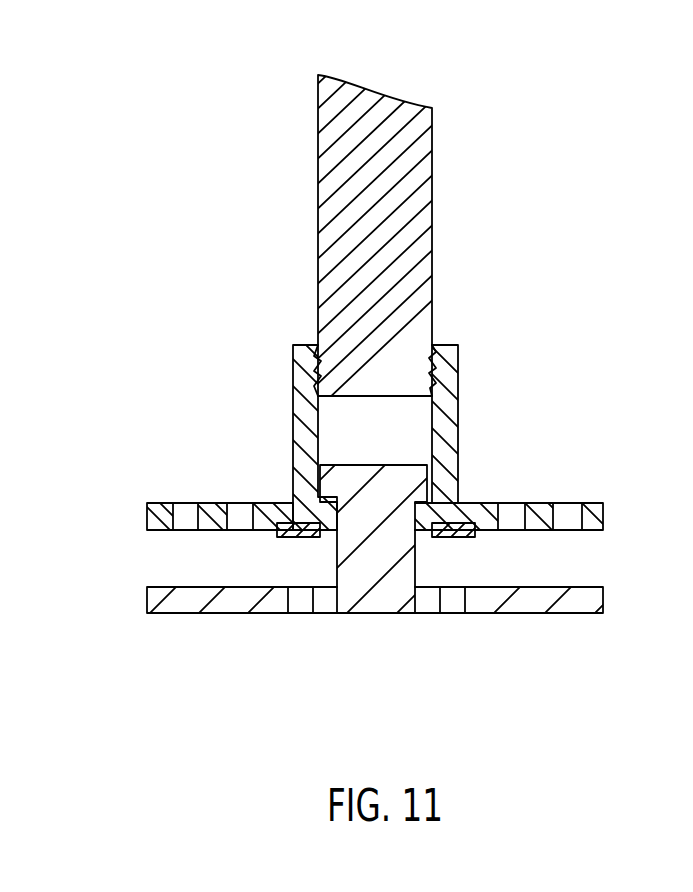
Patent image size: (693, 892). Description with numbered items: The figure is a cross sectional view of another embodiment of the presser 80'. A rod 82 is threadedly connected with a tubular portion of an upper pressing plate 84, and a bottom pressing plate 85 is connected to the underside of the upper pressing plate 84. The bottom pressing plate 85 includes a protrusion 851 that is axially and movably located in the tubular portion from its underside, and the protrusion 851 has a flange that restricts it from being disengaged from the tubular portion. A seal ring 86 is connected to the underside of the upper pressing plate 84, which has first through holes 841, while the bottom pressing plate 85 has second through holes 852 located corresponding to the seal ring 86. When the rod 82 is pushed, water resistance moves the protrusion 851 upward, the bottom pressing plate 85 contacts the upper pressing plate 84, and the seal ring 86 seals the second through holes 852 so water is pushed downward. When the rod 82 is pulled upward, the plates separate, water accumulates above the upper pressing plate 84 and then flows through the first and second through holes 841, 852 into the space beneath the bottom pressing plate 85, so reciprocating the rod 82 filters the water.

The presser 80' is at (544, 106).
The rod 82 is at (407, 208).
The upper pressing plate 84 is at (447, 428).
The first through holes 841 is at (185, 512).
The bottom pressing plate 85 is at (597, 604).
The protrusion 851 is at (337, 478).
The second through holes 852 is at (303, 612).
The seal ring 86 is at (296, 533).